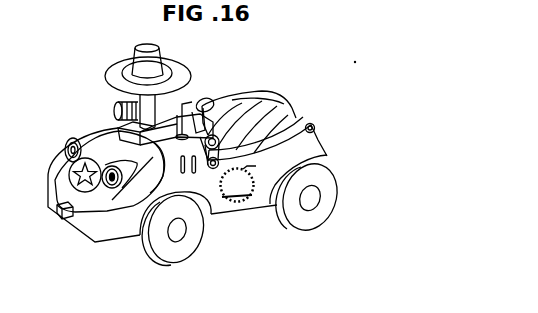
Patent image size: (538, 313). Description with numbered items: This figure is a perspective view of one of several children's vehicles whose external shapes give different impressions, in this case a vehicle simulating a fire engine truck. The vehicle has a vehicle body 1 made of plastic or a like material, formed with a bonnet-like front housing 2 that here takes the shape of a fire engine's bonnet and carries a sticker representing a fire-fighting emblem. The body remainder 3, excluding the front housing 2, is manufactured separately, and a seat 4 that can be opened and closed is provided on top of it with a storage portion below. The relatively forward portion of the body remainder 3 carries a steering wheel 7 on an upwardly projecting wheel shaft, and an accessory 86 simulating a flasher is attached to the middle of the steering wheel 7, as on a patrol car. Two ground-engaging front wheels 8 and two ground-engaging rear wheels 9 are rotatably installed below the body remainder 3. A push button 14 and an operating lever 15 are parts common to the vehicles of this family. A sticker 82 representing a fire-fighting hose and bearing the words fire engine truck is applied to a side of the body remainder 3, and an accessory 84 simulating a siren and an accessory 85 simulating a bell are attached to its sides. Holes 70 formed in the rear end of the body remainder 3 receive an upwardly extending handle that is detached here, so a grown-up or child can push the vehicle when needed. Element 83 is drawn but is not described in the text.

The vehicle body 1 is at (333, 133).
The front housing 2 is at (97, 133).
The body remainder 3 is at (214, 206).
The seat 4 is at (258, 105).
The steering wheel 7 is at (115, 72).
The ground-engaging front wheels 8 is at (170, 255).
The ground-engaging rear wheels 9 is at (302, 220).
The push button 14 is at (62, 214).
The operating lever 15 is at (214, 136).
The holes 70 is at (312, 124).
The sticker 82 is at (77, 183).
The dotted circle element 83 is at (245, 207).
The accessory simulating a siren 84 is at (113, 105).
The accessory simulating a bell 85 is at (195, 100).
The accessory simulating a flasher 86 is at (137, 55).